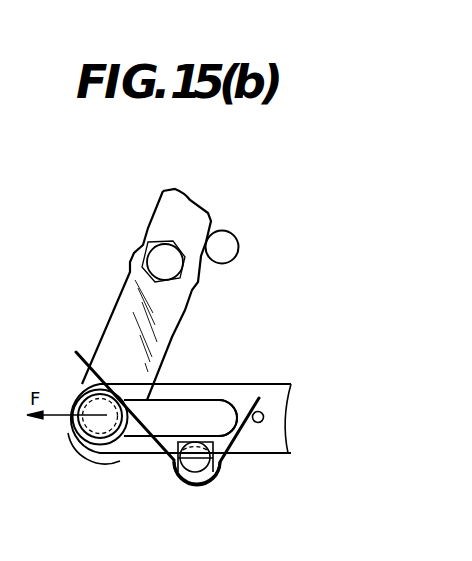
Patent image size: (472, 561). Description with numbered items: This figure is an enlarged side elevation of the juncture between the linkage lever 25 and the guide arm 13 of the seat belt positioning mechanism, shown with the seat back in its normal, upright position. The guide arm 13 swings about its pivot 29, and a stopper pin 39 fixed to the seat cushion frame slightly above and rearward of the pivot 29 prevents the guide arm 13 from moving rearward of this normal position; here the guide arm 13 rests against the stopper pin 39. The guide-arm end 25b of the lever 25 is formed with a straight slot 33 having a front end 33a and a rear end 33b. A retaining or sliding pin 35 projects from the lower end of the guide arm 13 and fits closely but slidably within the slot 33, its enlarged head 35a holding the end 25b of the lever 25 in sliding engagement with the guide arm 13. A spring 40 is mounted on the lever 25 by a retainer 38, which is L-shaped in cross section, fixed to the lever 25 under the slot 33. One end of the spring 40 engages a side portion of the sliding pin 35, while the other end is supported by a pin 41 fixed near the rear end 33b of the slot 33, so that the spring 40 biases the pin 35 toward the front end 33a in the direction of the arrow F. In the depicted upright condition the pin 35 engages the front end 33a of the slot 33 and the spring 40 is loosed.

The guide arm 13 is at (152, 221).
The pivot 29 is at (158, 265).
The stopper pin 39 is at (227, 246).
The linkage lever 25 is at (272, 460).
The guide-arm end 25b is at (141, 438).
The straight slot 33 is at (176, 412).
The front end of the slot 33a is at (78, 455).
The rear end of the slot 33b is at (234, 398).
The sliding pin 35 is at (113, 457).
The enlarged head 35a is at (67, 427).
The spring 40 is at (165, 468).
The retainer 38 is at (213, 480).
The pin 41 is at (263, 413).